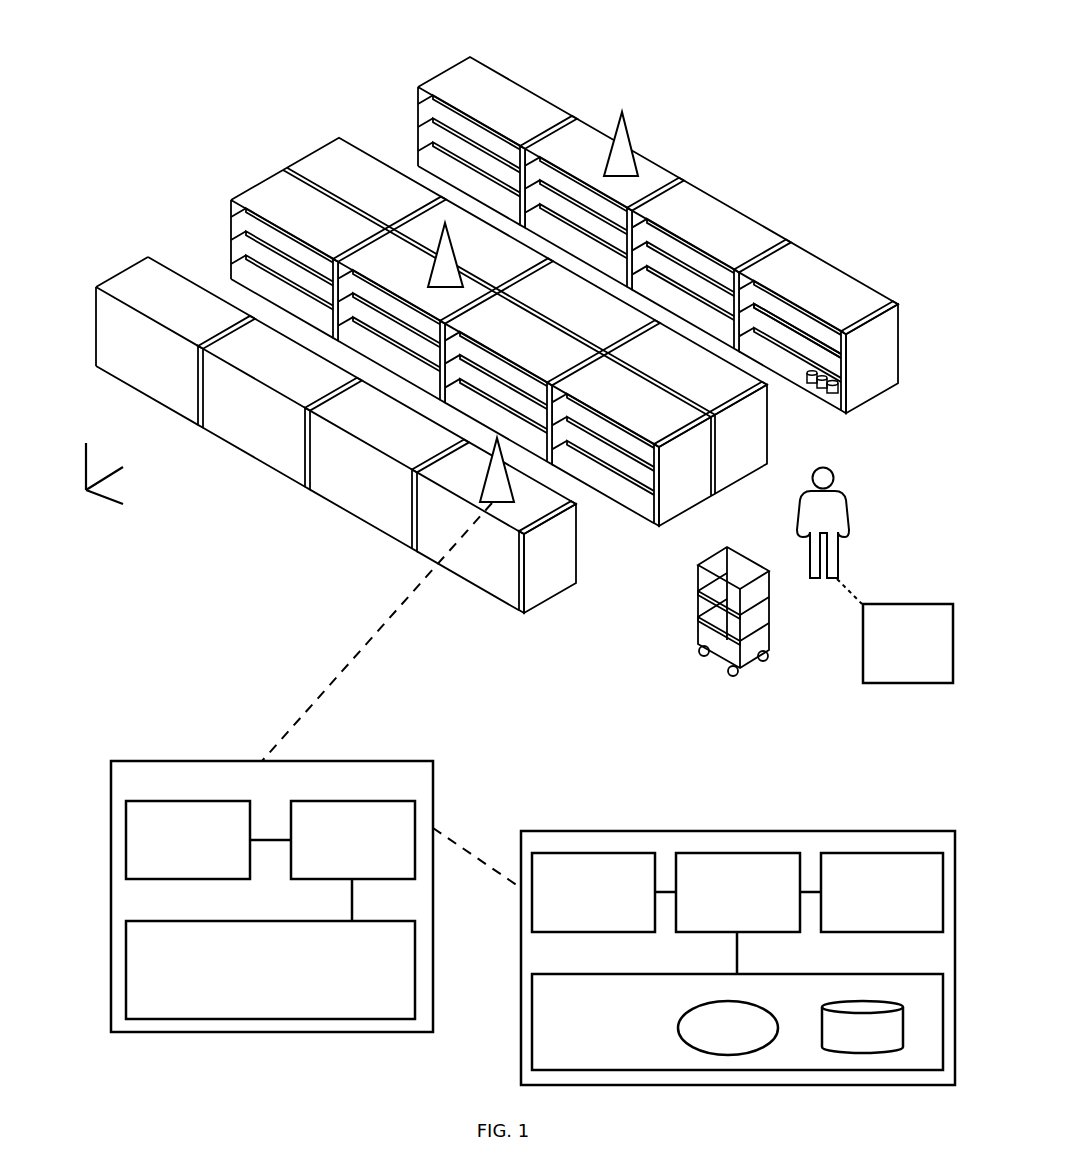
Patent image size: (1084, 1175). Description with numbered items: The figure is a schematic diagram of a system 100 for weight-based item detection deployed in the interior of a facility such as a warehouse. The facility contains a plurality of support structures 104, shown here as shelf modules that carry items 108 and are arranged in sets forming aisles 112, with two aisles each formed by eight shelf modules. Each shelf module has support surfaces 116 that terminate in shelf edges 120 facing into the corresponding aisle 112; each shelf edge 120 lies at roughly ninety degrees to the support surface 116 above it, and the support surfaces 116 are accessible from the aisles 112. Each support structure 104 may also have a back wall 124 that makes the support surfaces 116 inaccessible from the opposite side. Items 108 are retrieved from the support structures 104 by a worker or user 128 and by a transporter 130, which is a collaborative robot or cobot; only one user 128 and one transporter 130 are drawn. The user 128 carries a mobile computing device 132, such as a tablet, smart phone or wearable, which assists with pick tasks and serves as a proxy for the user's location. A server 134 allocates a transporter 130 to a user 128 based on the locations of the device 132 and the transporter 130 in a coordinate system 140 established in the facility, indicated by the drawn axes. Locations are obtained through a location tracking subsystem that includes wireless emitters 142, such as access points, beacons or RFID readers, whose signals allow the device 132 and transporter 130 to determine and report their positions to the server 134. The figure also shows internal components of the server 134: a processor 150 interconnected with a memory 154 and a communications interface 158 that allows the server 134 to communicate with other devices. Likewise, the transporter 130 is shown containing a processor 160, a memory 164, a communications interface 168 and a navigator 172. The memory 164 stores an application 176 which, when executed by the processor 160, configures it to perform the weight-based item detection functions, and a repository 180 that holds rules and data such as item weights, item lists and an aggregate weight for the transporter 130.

The system 100 is at (518, 333).
The support structure 104 is at (142, 267).
The items 108 is at (836, 398).
The aisle 112 is at (590, 540).
The support surface 116 is at (800, 328).
The shelf edge 120 is at (810, 330).
The back wall 124 is at (388, 518).
The user 128 is at (849, 531).
The transporter 130 is at (728, 667).
The mobile computing device 132 is at (891, 636).
The server 134 is at (255, 795).
The coordinate system 140 is at (86, 492).
The wireless emitters 142 is at (622, 112).
The processor 150 is at (336, 838).
The memory 154 is at (253, 970).
The communications interface 158 is at (171, 828).
The processor 160 is at (721, 891).
The memory 164 is at (576, 1022).
The communications interface 168 is at (576, 880).
The navigator 172 is at (865, 891).
The application 176 is at (711, 1044).
The repository 180 is at (845, 1044).